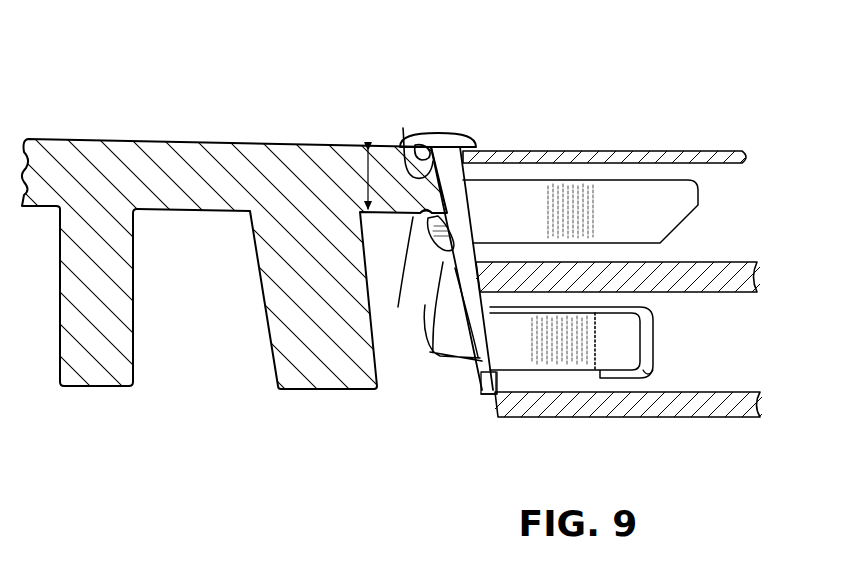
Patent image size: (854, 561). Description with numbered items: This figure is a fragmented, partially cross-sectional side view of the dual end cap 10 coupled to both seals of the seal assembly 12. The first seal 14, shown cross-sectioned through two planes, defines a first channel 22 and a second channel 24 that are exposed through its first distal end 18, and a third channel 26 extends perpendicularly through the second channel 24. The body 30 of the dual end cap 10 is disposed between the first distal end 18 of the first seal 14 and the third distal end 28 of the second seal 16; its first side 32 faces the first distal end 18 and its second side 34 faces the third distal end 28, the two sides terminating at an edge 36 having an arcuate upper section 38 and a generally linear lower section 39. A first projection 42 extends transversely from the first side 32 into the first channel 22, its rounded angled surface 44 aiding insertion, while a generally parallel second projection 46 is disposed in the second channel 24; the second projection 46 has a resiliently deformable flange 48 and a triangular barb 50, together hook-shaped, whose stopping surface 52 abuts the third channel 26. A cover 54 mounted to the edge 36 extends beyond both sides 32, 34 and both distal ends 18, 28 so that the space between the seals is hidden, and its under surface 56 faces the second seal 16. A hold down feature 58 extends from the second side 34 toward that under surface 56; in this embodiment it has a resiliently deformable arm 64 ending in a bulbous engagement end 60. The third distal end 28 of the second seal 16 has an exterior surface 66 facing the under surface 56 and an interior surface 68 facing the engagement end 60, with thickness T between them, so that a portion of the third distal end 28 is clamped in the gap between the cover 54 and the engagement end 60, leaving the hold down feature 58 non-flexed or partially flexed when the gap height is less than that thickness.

The dual end cap 10 is at (432, 118).
The seal assembly 12 is at (493, 80).
The first seal 14 is at (566, 136).
The second seal 16 is at (256, 132).
The first distal end 18 is at (468, 168).
The first channel 22 is at (658, 163).
The second channel 24 is at (535, 383).
The third channel 26 is at (645, 381).
The third distal end 28 is at (395, 150).
The body 30 is at (476, 384).
The first side 32 is at (482, 396).
The second side 34 is at (429, 387).
The edge 36 is at (432, 300).
The upper section 38 is at (438, 158).
The lower section 39 is at (489, 399).
The first projection 42 is at (609, 177).
The angled surface 44 is at (690, 220).
The second projection 46 is at (590, 376).
The flange 48 is at (567, 339).
The barb 50 is at (612, 345).
The stopping surface 52 is at (597, 316).
The cover 54 is at (444, 134).
The under surface 56 is at (417, 145).
The hold down feature 58 is at (447, 280).
The engagement end 60 is at (441, 261).
The arm 64 is at (445, 316).
The exterior surface 66 is at (366, 147).
The interior surface 68 is at (416, 214).